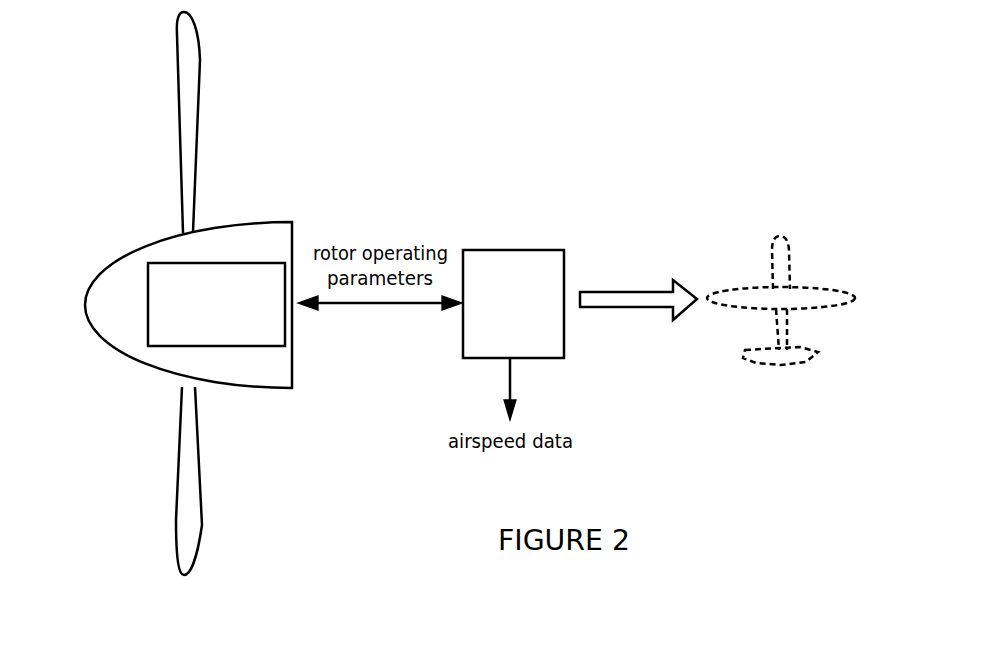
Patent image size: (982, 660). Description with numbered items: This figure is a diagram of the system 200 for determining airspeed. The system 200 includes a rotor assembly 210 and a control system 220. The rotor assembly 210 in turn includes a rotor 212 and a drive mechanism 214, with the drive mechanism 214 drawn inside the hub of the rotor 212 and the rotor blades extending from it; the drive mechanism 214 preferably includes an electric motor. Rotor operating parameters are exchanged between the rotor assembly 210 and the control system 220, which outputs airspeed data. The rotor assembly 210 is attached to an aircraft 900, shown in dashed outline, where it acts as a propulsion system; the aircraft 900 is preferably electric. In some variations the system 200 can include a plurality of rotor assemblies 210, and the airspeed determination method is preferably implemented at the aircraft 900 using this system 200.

The system for determining airspeed 200 is at (351, 185).
The rotor assembly 210 is at (343, 578).
The rotor 212 is at (100, 246).
The drive mechanism 214 is at (233, 317).
The control system 220 is at (530, 316).
The aircraft 900 is at (782, 267).